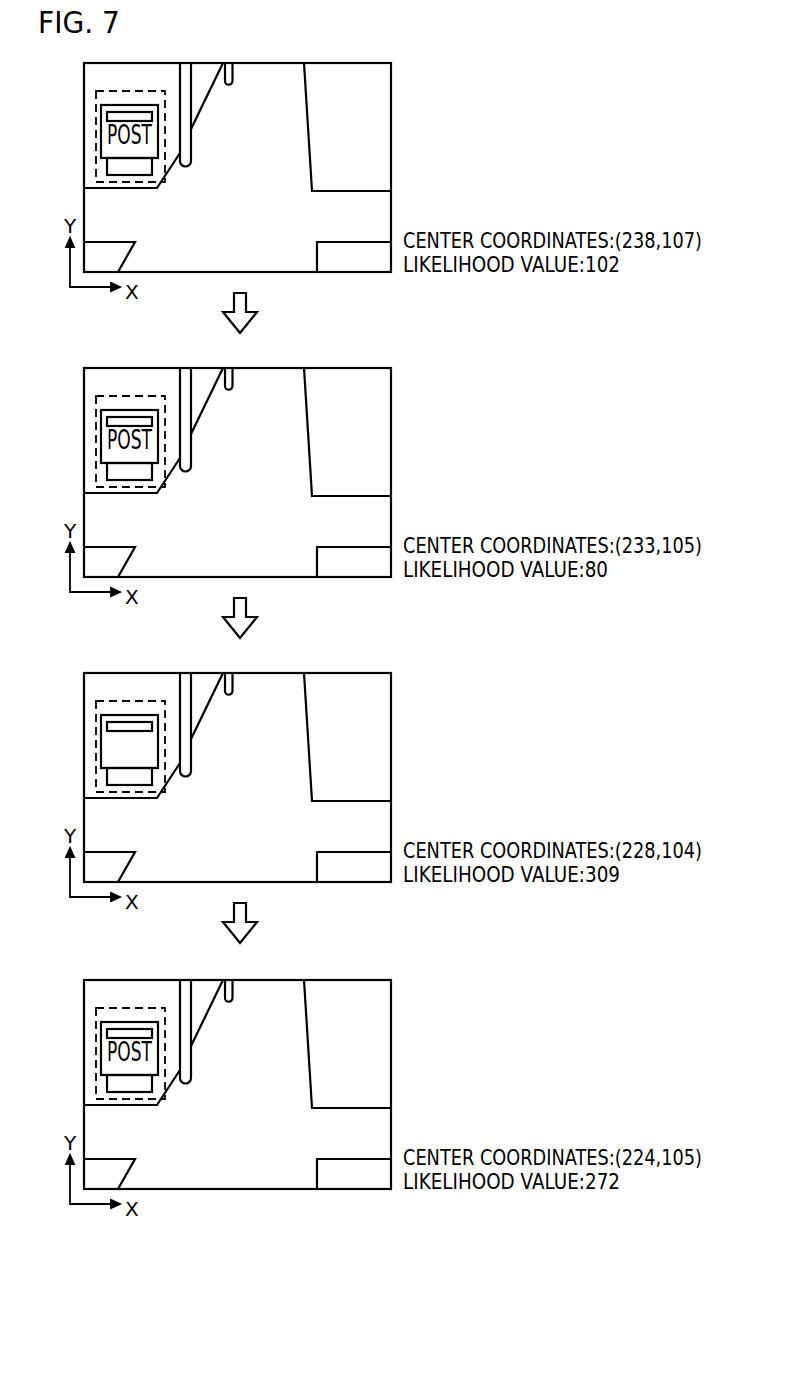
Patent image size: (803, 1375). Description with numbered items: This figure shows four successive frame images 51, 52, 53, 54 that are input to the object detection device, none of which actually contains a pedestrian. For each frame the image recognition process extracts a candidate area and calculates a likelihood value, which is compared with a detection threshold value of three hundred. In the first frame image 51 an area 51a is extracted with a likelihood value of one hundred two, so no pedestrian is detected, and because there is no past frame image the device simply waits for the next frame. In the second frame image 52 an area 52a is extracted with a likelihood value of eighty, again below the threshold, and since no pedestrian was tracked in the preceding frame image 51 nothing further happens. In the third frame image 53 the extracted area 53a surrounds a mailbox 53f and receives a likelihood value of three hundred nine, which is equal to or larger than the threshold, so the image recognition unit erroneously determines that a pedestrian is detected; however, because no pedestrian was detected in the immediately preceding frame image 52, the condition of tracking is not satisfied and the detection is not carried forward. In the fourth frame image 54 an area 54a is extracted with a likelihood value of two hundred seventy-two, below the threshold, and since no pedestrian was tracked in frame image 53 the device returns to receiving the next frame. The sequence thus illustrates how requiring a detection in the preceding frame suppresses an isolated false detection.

The frame image 51 is at (85, 172).
The area 51a is at (97, 128).
The frame image 52 is at (210, 472).
The area 52a is at (103, 440).
The frame image 53 is at (210, 777).
The area 53a is at (103, 745).
The mailbox 53f is at (133, 714).
The frame image 54 is at (210, 1084).
The area 54a is at (103, 1052).